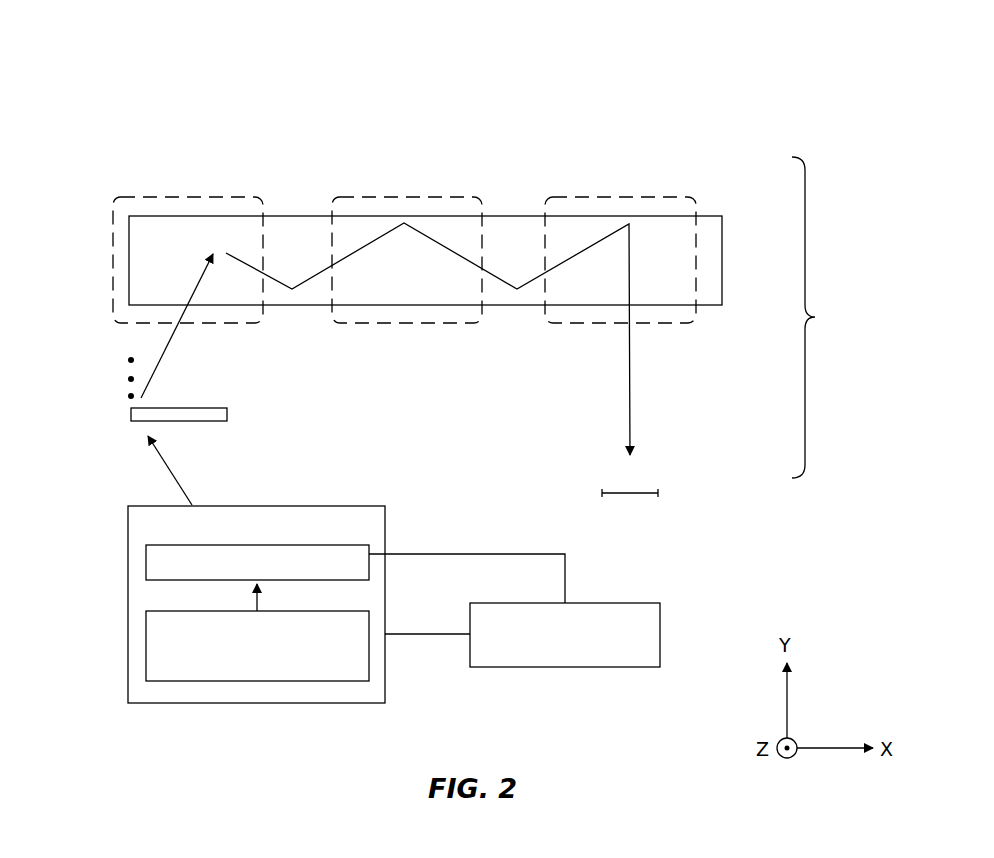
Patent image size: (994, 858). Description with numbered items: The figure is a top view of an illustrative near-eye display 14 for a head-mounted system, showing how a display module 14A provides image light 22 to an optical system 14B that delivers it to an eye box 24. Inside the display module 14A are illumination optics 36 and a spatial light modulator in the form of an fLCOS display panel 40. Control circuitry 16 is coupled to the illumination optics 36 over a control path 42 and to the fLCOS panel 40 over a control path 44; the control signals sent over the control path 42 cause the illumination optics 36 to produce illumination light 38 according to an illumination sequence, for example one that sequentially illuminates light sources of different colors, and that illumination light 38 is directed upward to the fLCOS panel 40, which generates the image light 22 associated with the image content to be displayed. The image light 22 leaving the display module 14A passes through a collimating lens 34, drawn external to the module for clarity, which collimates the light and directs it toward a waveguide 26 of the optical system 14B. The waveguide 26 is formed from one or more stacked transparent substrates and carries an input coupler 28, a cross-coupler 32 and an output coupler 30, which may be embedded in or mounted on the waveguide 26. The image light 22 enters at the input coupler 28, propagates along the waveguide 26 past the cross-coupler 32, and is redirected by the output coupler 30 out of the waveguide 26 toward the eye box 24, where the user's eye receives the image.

The display 14 is at (636, 54).
The display module 14A is at (128, 531).
The optical system 14B is at (825, 317).
The control circuitry 16 is at (660, 632).
The image light 22 is at (168, 356).
The eye box 24 is at (636, 497).
The waveguide 26 is at (722, 258).
The input coupler 28 is at (184, 194).
The output coupler 30 is at (617, 194).
The cross-coupler 32 is at (404, 194).
The collimating lens 34 is at (238, 414).
The illumination optics 36 is at (146, 646).
The illumination light 38 is at (259, 598).
The fLCOS display panel 40 is at (369, 570).
The control path 42 is at (433, 636).
The control path 44 is at (449, 553).